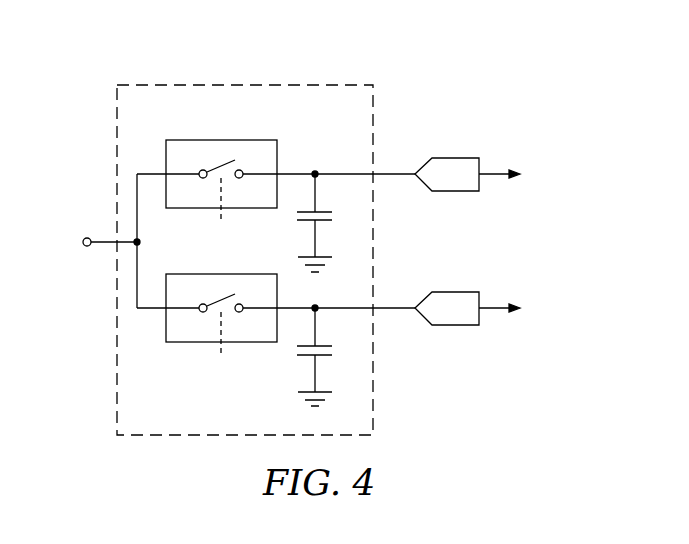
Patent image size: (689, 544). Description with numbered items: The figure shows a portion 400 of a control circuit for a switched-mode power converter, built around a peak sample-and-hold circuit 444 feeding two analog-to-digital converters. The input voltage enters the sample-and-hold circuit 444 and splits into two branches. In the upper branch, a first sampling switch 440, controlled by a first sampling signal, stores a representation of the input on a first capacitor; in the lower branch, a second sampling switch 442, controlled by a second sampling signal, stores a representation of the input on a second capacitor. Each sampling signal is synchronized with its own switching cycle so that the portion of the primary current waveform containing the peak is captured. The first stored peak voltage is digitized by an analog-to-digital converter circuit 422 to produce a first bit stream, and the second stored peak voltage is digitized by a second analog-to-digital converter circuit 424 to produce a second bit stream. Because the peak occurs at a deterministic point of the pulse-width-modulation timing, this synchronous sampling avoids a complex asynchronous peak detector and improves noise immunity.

The portion of a control circuit 400 is at (466, 70).
The peak sample-and-hold circuit 444 is at (245, 85).
The first sampling switch 440 is at (222, 140).
The second sampling switch 442 is at (222, 274).
The analog-to-digital converter circuit 422 is at (457, 158).
The second analog-to-digital converter circuit 424 is at (457, 292).